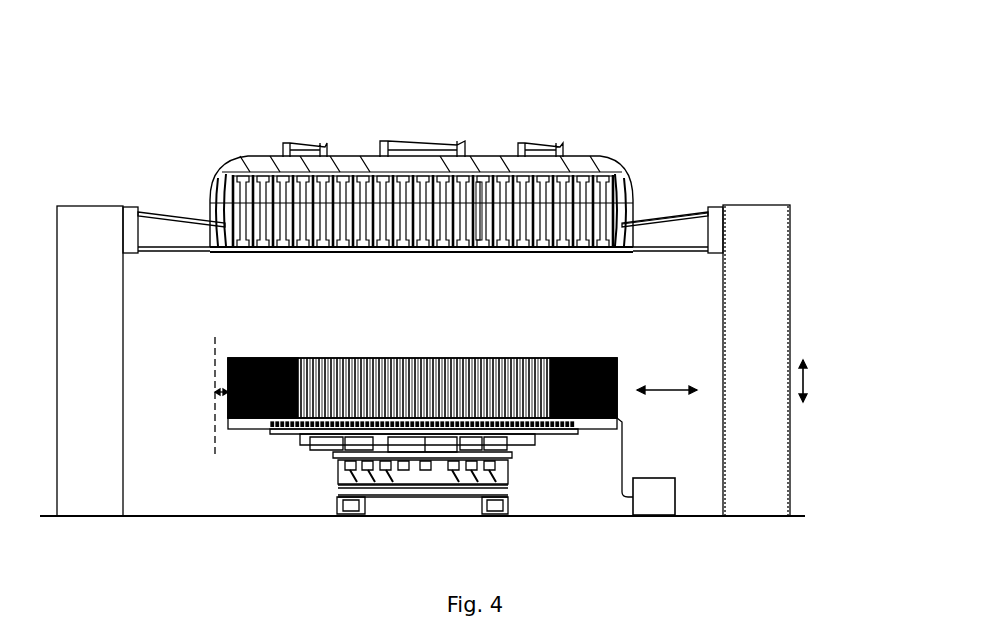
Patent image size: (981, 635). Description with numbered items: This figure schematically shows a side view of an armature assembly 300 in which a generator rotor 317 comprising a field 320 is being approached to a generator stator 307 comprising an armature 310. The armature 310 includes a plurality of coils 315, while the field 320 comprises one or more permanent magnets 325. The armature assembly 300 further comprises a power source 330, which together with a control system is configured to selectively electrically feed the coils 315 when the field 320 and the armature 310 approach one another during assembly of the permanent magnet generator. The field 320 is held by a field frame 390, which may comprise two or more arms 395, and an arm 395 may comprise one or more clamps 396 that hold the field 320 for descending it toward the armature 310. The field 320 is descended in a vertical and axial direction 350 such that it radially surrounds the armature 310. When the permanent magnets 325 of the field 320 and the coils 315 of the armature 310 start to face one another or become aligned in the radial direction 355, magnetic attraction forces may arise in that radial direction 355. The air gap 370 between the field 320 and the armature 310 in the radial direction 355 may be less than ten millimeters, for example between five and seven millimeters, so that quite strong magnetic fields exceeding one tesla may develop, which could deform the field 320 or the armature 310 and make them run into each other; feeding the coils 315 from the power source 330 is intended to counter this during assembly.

The armature assembly 300 is at (721, 80).
The generator stator 307 is at (441, 352).
The armature 310 is at (290, 357).
The coils 315 is at (600, 355).
The generator rotor 317 is at (357, 153).
The field 320 is at (583, 160).
The permanent magnets 325 is at (478, 170).
The power source 330 is at (654, 495).
The vertical and axial direction 350 is at (810, 381).
The radial direction 355 is at (665, 386).
The air gap 370 is at (221, 397).
The field frame 390 is at (771, 175).
The arms 395 is at (755, 234).
The clamps 396 is at (667, 228).